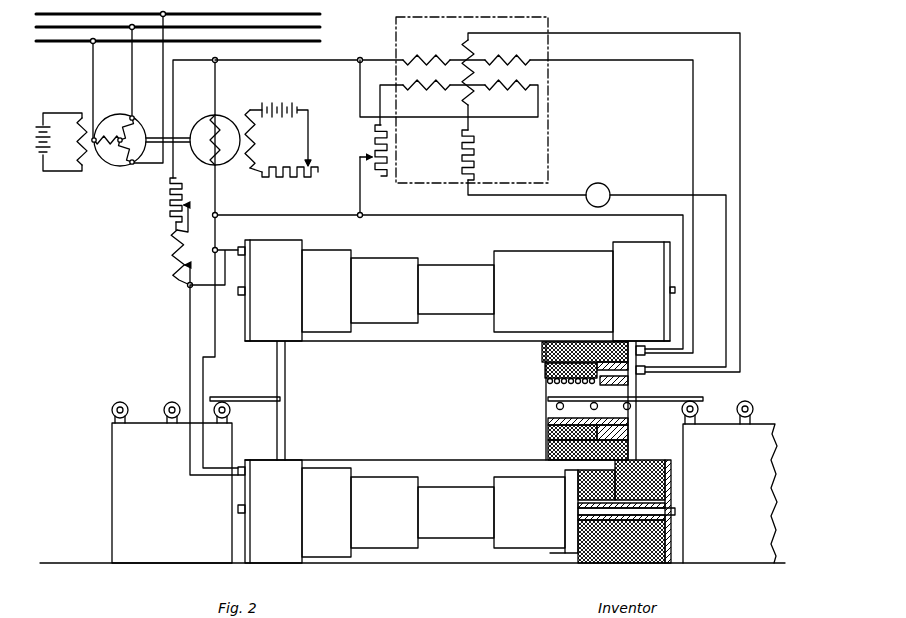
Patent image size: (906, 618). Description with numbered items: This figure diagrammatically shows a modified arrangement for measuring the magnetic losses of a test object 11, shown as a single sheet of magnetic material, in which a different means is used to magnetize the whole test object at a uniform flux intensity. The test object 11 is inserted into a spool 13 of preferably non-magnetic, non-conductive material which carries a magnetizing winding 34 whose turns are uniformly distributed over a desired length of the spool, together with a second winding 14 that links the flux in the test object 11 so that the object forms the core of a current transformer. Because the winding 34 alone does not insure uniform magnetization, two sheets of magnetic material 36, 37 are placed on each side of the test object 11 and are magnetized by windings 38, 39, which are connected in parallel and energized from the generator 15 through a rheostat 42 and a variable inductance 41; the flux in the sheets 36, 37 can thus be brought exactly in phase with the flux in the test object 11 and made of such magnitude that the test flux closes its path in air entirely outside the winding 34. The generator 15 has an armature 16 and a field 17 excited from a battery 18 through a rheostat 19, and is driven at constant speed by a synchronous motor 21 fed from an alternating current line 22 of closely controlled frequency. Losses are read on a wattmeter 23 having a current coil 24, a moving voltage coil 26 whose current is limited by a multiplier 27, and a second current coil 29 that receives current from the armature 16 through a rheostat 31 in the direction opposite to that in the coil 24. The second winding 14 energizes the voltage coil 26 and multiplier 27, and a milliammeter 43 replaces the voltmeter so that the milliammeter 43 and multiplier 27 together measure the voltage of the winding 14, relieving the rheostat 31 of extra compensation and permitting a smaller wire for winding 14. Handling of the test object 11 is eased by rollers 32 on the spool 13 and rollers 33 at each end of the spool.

The test object 11 is at (686, 397).
The spool 13 is at (640, 380).
The second winding 14 is at (545, 373).
The generator 15 is at (218, 145).
The armature 16 is at (211, 121).
The field 17 is at (256, 141).
The battery 18 is at (288, 105).
The rheostat 19 is at (290, 181).
The synchronous motor 21 is at (104, 186).
The alternating current line 22 is at (323, 22).
The wattmeter 23 is at (477, 194).
The current coil 24 is at (515, 58).
The voltage coil 26 is at (466, 43).
The multiplier 27 is at (476, 145).
The second current coil 29 is at (523, 93).
The rheostat 31 is at (375, 135).
The rollers 32 is at (594, 409).
The rollers 33 is at (229, 411).
The winding 34 is at (556, 343).
The sheet of magnetic material 36 is at (670, 291).
The sheet of magnetic material 37 is at (678, 511).
The winding 38 is at (640, 242).
The winding 39 is at (650, 459).
The variable inductance 41 is at (168, 256).
The rheostat 42 is at (168, 204).
The milliammeter 43 is at (607, 188).